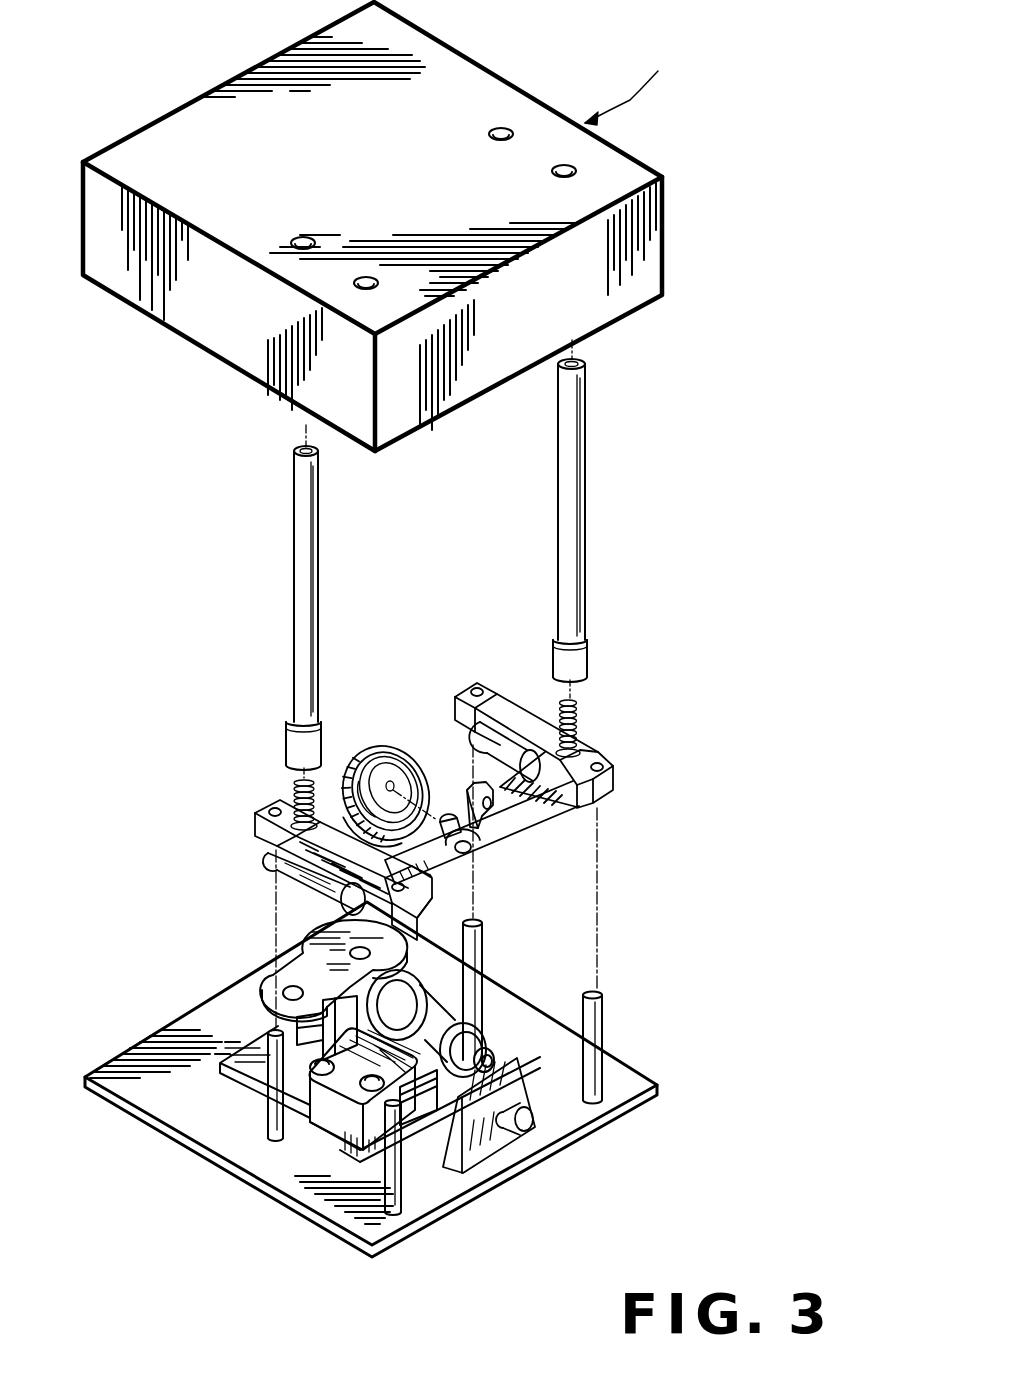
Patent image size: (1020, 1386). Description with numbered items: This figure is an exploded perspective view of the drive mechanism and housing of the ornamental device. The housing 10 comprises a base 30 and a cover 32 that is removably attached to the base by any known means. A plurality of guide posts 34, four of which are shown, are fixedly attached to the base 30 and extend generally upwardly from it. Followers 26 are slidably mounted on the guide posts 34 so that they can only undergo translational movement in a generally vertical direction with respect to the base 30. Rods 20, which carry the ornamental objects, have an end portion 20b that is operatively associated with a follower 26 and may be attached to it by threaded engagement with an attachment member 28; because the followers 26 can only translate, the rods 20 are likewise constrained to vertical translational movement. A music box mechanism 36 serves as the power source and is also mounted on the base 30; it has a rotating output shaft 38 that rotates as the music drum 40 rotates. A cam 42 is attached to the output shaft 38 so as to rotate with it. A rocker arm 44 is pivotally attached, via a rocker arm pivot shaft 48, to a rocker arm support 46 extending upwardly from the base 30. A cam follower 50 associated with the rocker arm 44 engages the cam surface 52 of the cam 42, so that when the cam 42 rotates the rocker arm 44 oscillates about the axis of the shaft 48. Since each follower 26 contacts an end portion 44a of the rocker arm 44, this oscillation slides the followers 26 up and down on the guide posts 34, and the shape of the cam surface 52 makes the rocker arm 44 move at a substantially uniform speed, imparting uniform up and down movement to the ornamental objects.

The housing 10 is at (640, 90).
The rods 20 is at (296, 552).
The end portion 20b is at (290, 743).
The follower 26 is at (256, 823).
The attachment member 28 is at (292, 790).
The base 30 is at (177, 1117).
The cover 32 is at (655, 250).
The guide posts 34 is at (273, 1057).
The music box mechanism 36 is at (290, 966).
The output shaft 38 is at (497, 1060).
The music drum 40 is at (433, 1000).
The cam 42 is at (380, 745).
The rocker arm 44 is at (495, 830).
The end portions 44a is at (320, 880).
The rocker arm support 46 is at (523, 1093).
The rocker arm pivot shaft 48 is at (508, 1133).
The cam follower 50 is at (468, 790).
The cam surface 52 is at (405, 745).